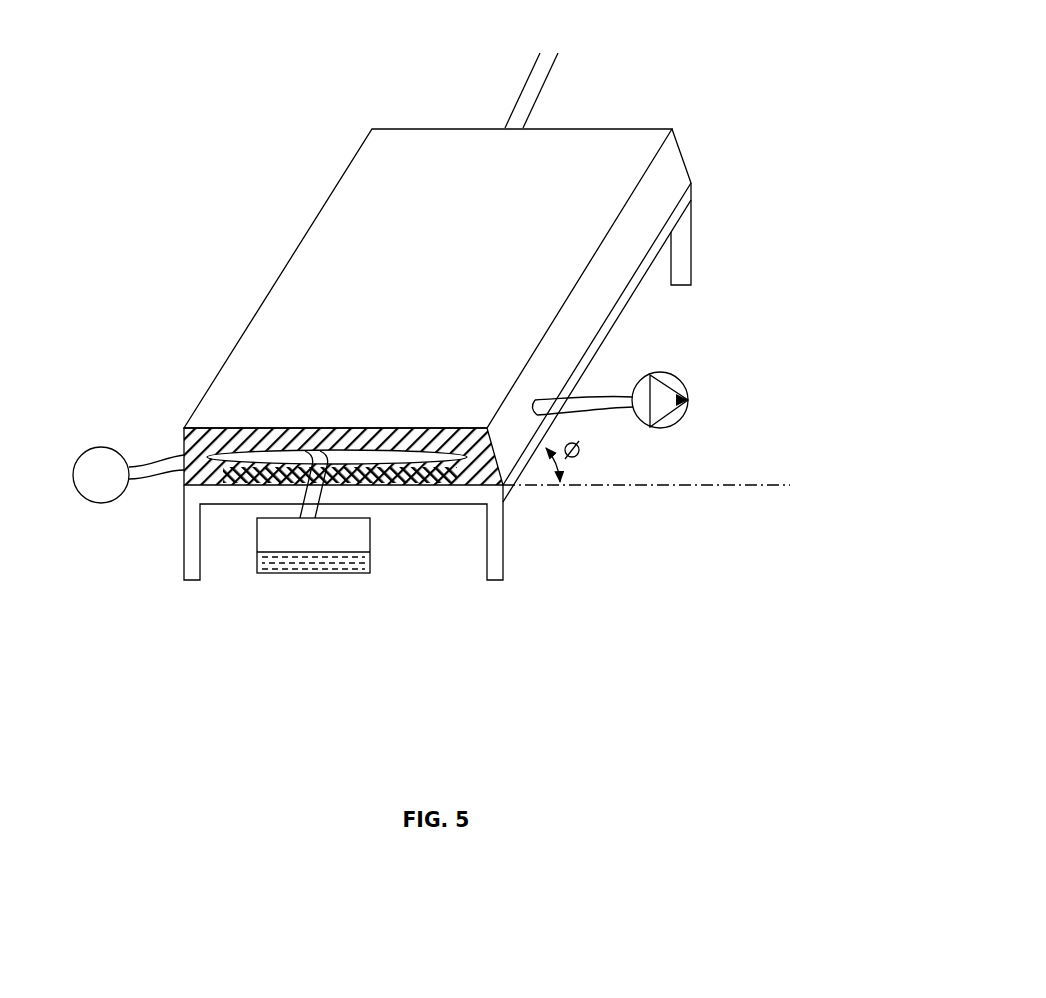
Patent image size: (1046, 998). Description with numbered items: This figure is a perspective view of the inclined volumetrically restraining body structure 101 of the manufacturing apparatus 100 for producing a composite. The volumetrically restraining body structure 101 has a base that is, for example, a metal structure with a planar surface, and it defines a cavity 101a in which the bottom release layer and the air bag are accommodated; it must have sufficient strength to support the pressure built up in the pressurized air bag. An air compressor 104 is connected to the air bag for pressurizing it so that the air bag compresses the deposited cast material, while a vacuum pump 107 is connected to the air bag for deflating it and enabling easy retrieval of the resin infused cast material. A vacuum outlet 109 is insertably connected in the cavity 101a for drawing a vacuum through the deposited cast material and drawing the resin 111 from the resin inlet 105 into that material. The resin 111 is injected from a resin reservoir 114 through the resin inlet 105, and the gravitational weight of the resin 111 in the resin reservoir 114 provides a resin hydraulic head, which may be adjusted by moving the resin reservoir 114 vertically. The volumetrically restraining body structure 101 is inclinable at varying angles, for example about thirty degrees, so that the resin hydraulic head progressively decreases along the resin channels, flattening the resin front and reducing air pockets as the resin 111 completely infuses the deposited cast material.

The apparatus 100 is at (630, 62).
The volumetrically restraining body structure 101 is at (409, 428).
The cavity 101a is at (367, 462).
The air compressor 104 is at (101, 504).
The resin inlet 105 is at (307, 497).
The vacuum pump 107 is at (688, 400).
The vacuum outlet 109 is at (522, 85).
The resin 111 is at (355, 558).
The resin reservoir 114 is at (282, 575).